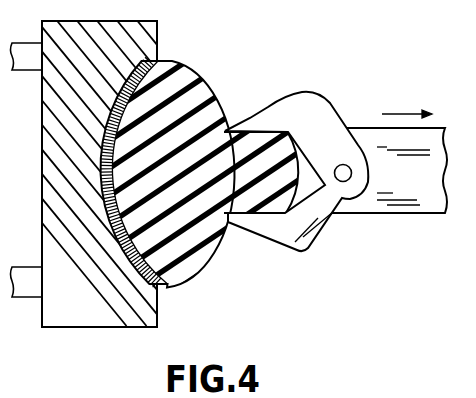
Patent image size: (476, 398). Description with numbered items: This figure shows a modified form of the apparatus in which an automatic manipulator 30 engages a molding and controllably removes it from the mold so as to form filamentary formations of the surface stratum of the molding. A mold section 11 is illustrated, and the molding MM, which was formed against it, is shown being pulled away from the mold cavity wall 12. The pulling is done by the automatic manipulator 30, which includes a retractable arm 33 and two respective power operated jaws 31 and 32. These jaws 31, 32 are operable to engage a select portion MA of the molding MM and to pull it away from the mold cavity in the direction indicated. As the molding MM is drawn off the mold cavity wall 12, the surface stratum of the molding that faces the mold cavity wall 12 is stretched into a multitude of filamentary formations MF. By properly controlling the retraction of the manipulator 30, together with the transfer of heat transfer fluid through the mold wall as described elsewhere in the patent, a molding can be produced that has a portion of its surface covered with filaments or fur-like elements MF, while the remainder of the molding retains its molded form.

The mold section 11 is at (73, 40).
The mold cavity wall 12 is at (137, 63).
The molding MM is at (182, 90).
The select portion of the molding MA is at (243, 177).
The filamentary formations MF is at (158, 288).
The automatic manipulator 30 is at (318, 90).
The power operated jaw 31 is at (322, 123).
The power operated jaw 32 is at (310, 243).
The retractable arm 33 is at (380, 207).